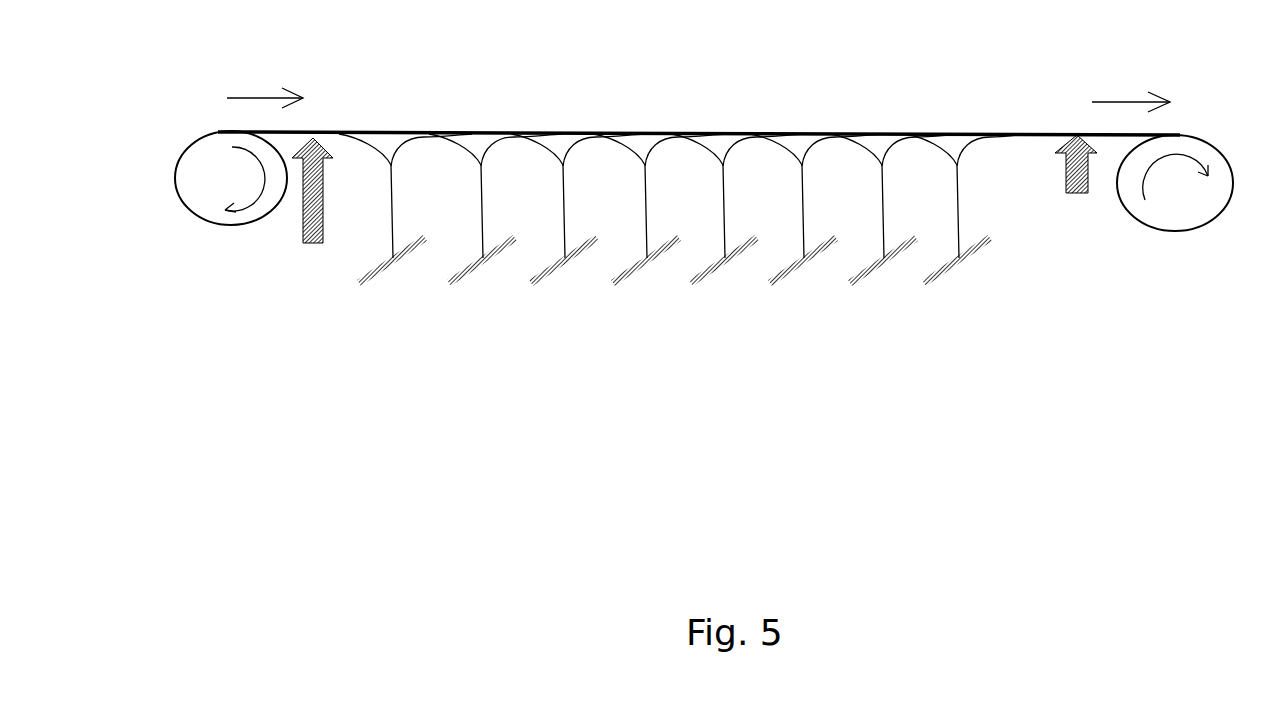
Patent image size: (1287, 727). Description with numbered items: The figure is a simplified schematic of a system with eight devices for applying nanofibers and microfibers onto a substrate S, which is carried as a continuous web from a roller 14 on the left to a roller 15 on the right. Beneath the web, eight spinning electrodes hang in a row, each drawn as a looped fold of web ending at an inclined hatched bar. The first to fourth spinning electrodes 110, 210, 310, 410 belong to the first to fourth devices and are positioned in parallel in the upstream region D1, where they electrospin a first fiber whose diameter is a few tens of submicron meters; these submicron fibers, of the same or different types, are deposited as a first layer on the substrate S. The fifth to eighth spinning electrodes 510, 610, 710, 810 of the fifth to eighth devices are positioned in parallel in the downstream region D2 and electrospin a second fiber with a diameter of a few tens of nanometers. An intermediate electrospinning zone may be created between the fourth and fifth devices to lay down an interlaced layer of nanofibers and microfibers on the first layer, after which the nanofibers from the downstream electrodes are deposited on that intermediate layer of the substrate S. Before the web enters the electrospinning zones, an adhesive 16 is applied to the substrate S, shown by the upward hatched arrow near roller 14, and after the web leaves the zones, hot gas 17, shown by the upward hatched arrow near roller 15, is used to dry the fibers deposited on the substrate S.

The substrate S is at (1040, 134).
The first roller 14 is at (177, 170).
The second roller 15 is at (1227, 200).
The adhesive 16 is at (312, 210).
The hot gas 17 is at (1076, 188).
The upstream region D1 is at (265, 83).
The downstream region D2 is at (1131, 87).
The first spinning electrode 110 is at (405, 230).
The second spinning electrode 210 is at (495, 230).
The third spinning electrode 310 is at (577, 230).
The fourth spinning electrode 410 is at (659, 230).
The fifth spinning electrode 510 is at (737, 230).
The sixth spinning electrode 610 is at (816, 230).
The seventh spinning electrode 710 is at (895, 230).
The eighth spinning electrode 810 is at (965, 230).